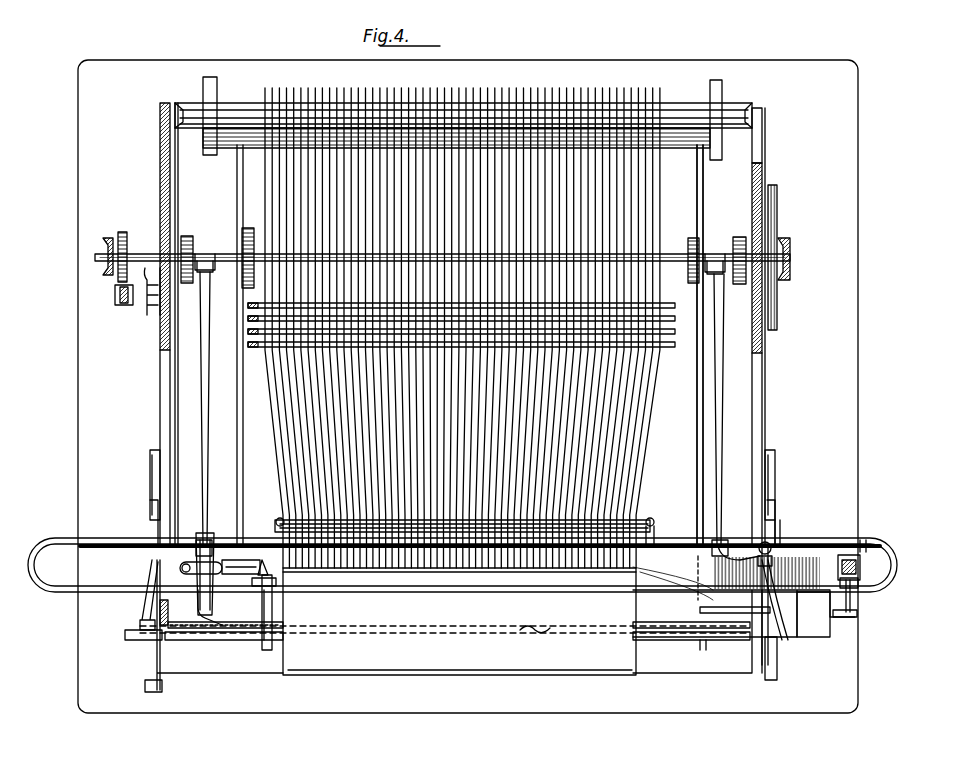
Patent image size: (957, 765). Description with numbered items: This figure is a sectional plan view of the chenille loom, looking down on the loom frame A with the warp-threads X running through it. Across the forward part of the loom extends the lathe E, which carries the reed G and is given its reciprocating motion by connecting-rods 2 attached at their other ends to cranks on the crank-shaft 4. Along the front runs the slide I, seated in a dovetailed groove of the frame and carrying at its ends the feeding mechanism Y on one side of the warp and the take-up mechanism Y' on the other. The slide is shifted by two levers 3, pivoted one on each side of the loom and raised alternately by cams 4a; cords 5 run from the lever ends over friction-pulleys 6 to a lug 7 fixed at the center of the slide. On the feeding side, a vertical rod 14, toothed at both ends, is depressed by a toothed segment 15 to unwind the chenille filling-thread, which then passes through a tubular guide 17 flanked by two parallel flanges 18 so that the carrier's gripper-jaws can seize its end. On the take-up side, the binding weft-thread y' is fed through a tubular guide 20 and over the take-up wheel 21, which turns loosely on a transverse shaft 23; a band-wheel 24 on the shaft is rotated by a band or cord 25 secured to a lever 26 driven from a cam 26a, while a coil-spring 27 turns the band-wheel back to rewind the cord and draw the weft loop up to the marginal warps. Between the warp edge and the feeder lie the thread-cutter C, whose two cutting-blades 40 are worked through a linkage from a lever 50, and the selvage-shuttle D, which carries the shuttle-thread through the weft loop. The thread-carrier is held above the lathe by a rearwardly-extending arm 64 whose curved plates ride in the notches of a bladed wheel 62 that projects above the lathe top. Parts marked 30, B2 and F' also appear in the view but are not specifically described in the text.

The frame A is at (468, 386).
The warp-threads X is at (645, 421).
The connecting-rods 2 is at (210, 352).
The levers 3 is at (176, 378).
The crank-shaft 4 is at (668, 256).
The cams 4a is at (192, 240).
The cords 5 is at (182, 618).
The friction-pulleys 6 is at (188, 640).
The lug 7 is at (538, 624).
The vertical rod 14 is at (120, 306).
The toothed segment 15 is at (127, 243).
The tubular guide 17 is at (182, 572).
The parallel flanges 18 is at (238, 582).
The tubular guide 20 is at (870, 570).
The take-up wheel 21 is at (862, 565).
The transverse shaft 23 is at (855, 600).
The band-wheel 24 is at (860, 618).
The band or cord 25 is at (826, 620).
The lever 26 is at (696, 468).
The cam 26a is at (690, 284).
The coil-spring 27 is at (868, 584).
The lever 30 is at (758, 622).
The cutting-blades 40 is at (274, 606).
The lever 50 is at (150, 478).
The bladed wheel 62 is at (763, 538).
The rearwardly-extending arm 64 is at (748, 541).
The bracket arm B2 is at (796, 500).
The thread-cutter C is at (272, 545).
The selvage-shuttle D is at (270, 590).
The lathe E is at (462, 565).
The heddle bars F' is at (460, 342).
The reed G is at (656, 520).
The slide I is at (704, 652).
The feeding mechanism Y is at (209, 568).
The take-up mechanism Y' is at (876, 530).
The binding weft-thread y' is at (789, 527).